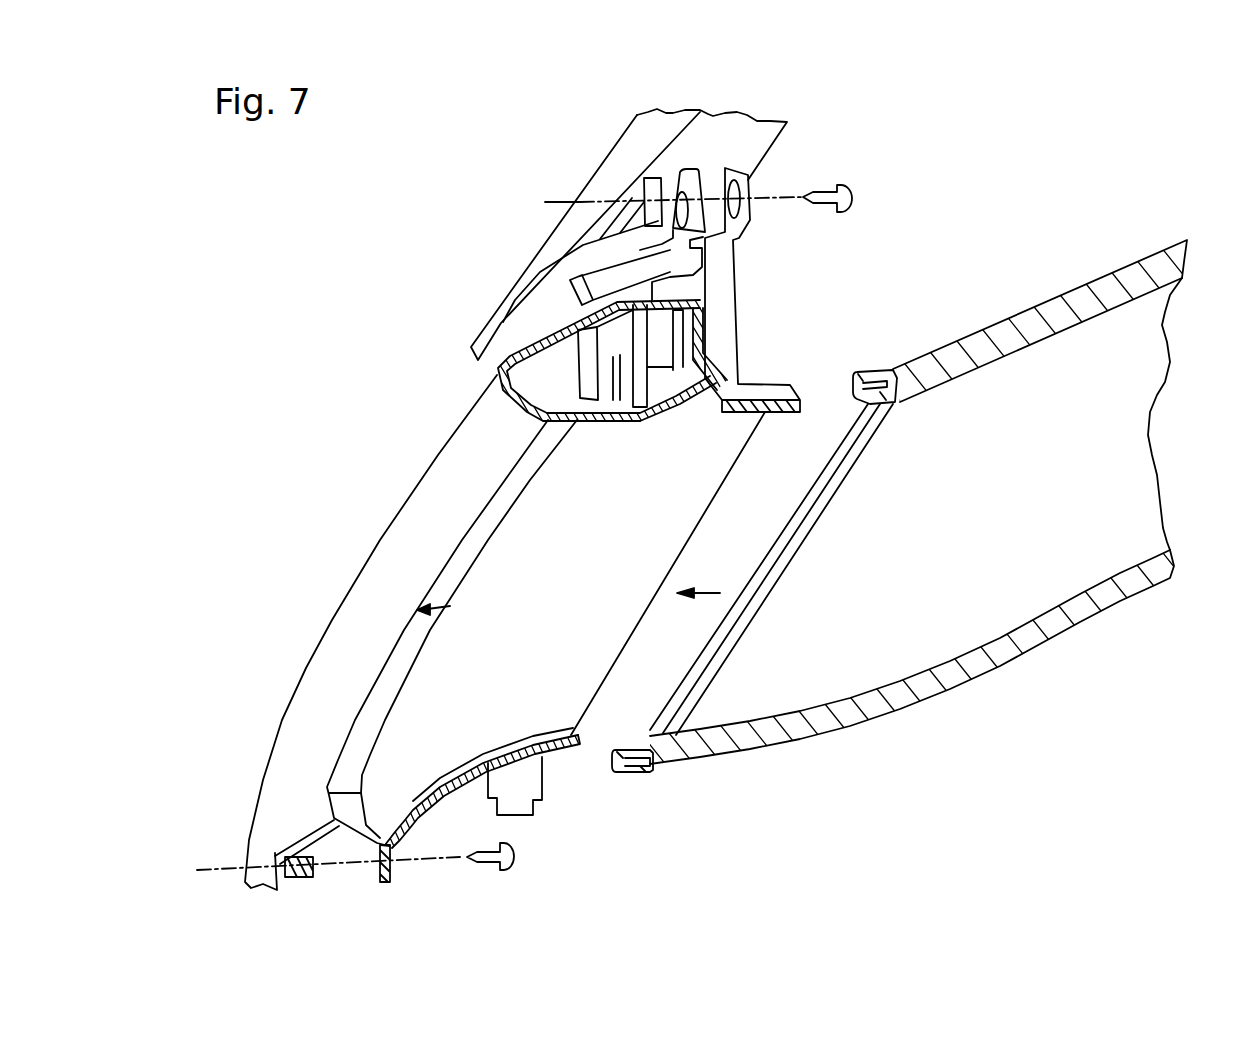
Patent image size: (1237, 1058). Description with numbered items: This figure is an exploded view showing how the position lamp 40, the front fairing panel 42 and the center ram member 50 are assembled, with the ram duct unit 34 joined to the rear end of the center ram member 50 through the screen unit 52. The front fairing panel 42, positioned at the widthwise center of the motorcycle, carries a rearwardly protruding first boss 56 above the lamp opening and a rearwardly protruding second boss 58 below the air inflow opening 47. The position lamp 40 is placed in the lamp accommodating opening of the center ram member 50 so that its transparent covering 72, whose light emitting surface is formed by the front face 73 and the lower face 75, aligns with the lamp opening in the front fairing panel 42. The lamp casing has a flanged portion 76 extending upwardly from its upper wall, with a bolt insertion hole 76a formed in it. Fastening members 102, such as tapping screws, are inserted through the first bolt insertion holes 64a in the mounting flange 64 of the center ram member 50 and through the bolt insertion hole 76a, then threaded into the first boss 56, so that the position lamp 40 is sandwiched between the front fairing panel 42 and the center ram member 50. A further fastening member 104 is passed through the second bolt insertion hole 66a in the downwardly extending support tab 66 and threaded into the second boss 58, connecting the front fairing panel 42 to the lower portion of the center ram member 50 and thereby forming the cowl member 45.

The ram duct unit 34 is at (1075, 283).
The position lamp 40 is at (594, 367).
The front fairing panel 42 is at (598, 170).
The cowl member 45 is at (558, 469).
The air inflow opening 47 is at (293, 837).
The center ram member 50 is at (590, 737).
The screen unit 52 is at (723, 663).
The first boss 56 is at (643, 193).
The second boss 58 is at (305, 873).
The mounting flange 64 is at (773, 278).
The first bolt insertion hole 64a is at (738, 188).
The support tab 66 is at (428, 859).
The second bolt insertion hole 66a is at (390, 857).
The covering 72 is at (500, 388).
The front face 73 is at (520, 403).
The lower face 75 is at (617, 421).
The flanged portion 76 is at (703, 184).
The bolt insertion hole 76a is at (676, 192).
The fastening member 102 is at (855, 196).
The fastening member 104 is at (512, 848).